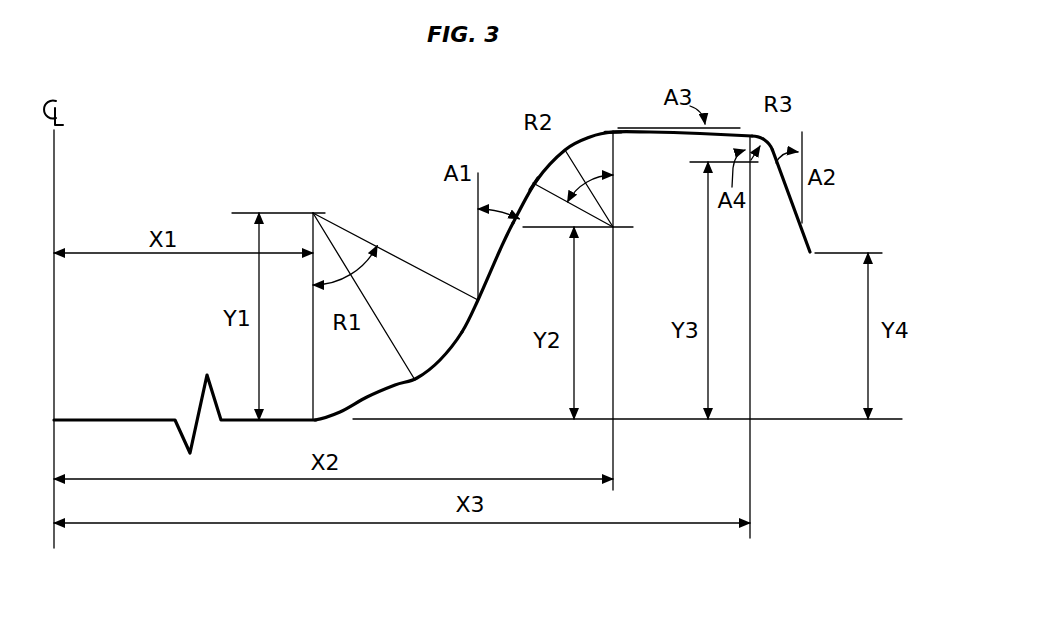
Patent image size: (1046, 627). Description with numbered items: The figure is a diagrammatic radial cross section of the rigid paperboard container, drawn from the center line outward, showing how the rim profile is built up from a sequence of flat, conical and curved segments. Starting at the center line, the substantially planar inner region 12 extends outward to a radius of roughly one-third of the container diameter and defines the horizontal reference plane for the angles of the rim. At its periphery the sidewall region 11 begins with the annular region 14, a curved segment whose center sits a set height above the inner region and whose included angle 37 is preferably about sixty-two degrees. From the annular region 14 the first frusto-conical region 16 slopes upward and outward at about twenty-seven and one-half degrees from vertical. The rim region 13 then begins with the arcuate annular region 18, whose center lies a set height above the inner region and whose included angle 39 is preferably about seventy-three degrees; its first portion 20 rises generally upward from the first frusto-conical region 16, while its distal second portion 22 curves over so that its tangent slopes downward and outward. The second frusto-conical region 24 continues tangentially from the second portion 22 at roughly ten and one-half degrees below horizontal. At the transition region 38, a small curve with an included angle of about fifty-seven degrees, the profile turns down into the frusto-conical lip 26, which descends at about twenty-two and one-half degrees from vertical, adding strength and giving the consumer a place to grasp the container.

The sidewall region 11 is at (479, 252).
The planar inner region 12 is at (107, 418).
The rim region 13 is at (726, 140).
The annular region 14 is at (438, 363).
The first frusto-conical region 16 is at (500, 258).
The arcuate annular region 18 is at (578, 140).
The first portion 20 is at (534, 184).
The second portion 22 is at (618, 132).
The second frusto-conical region 24 is at (677, 137).
The lip 26 is at (783, 192).
The included angle 37 is at (346, 248).
The transition region 38 is at (766, 140).
The included angle 39 is at (603, 193).